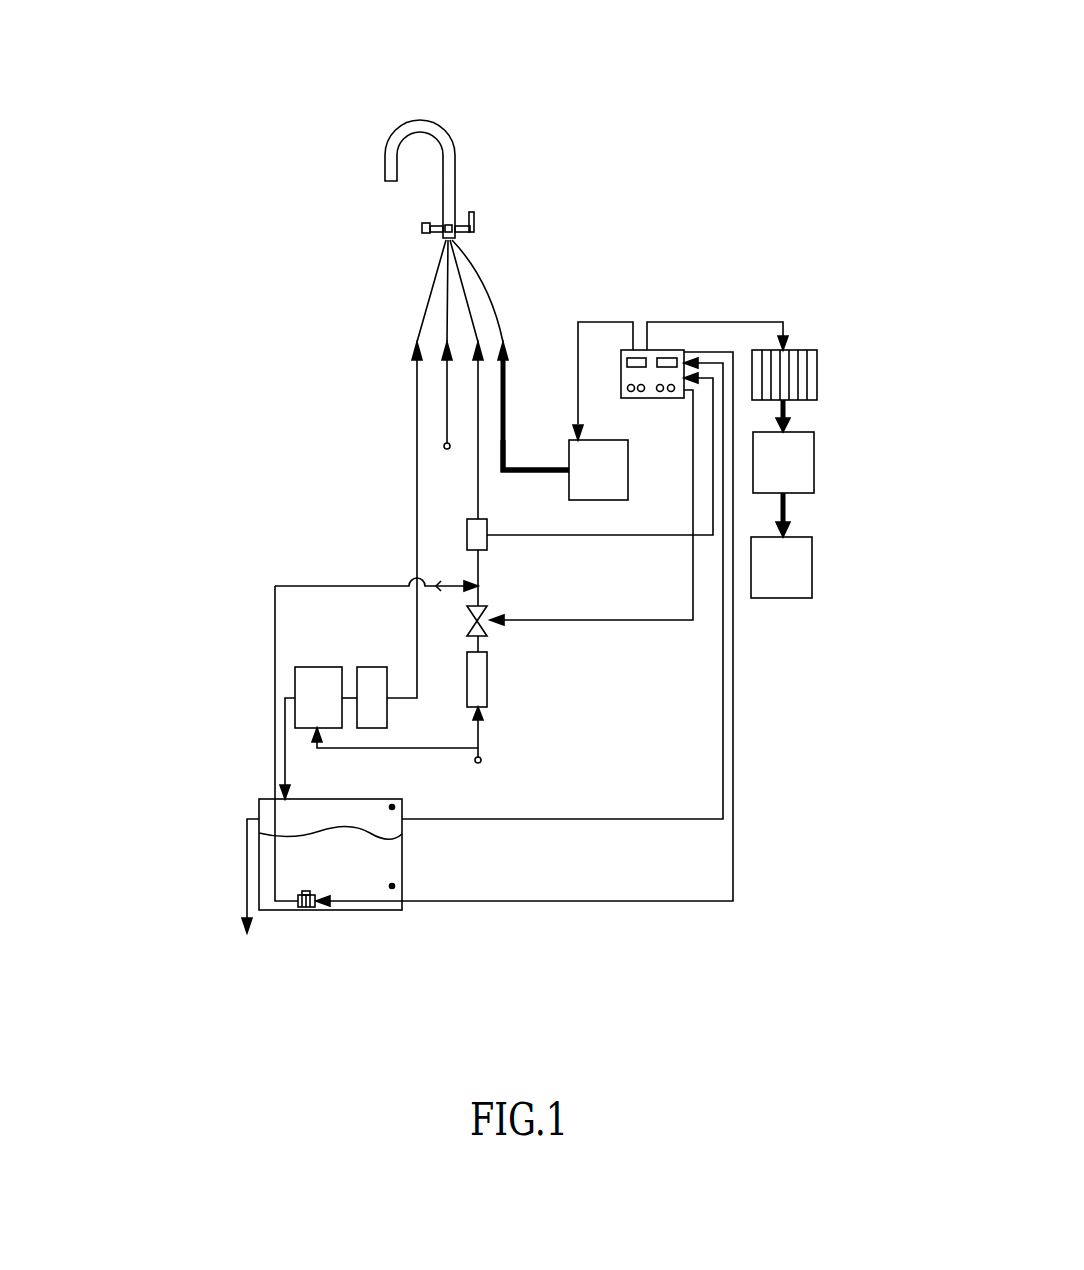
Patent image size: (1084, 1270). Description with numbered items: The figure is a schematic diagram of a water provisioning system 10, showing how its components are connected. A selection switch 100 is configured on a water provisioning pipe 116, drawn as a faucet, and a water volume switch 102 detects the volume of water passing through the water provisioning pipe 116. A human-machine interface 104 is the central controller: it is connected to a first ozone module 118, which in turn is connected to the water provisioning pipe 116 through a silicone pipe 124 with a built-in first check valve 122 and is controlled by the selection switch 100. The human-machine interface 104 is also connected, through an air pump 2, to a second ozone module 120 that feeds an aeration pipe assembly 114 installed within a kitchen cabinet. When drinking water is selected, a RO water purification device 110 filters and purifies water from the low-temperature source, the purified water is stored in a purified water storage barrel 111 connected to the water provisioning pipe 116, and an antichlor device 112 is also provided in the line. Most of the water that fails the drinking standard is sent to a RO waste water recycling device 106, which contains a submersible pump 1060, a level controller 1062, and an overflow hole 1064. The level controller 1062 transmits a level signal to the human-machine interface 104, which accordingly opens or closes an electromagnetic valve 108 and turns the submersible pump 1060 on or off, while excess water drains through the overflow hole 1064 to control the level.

The water provisioning system 10 is at (737, 183).
The selection switch 100 is at (478, 215).
The water provisioning pipe 116 is at (408, 138).
The silicone pipe 124 is at (505, 366).
The first check valve 122 is at (520, 468).
The first ozone module 118 is at (600, 502).
The human-machine interface 104 is at (667, 350).
The air pump 2 is at (805, 350).
The second ozone module 120 is at (814, 462).
The aeration pipe assembly 114 is at (812, 568).
The water volume switch 102 is at (467, 525).
The electromagnetic valve 108 is at (470, 622).
The antichlor device 112 is at (487, 680).
The purified water storage barrel 111 is at (368, 667).
The RO water purification device 110 is at (295, 682).
The RO waste water recycling device 106 is at (262, 798).
The overflow hole 1064 is at (258, 819).
The submersible pump 1060 is at (306, 908).
The level controller 1062 is at (392, 886).